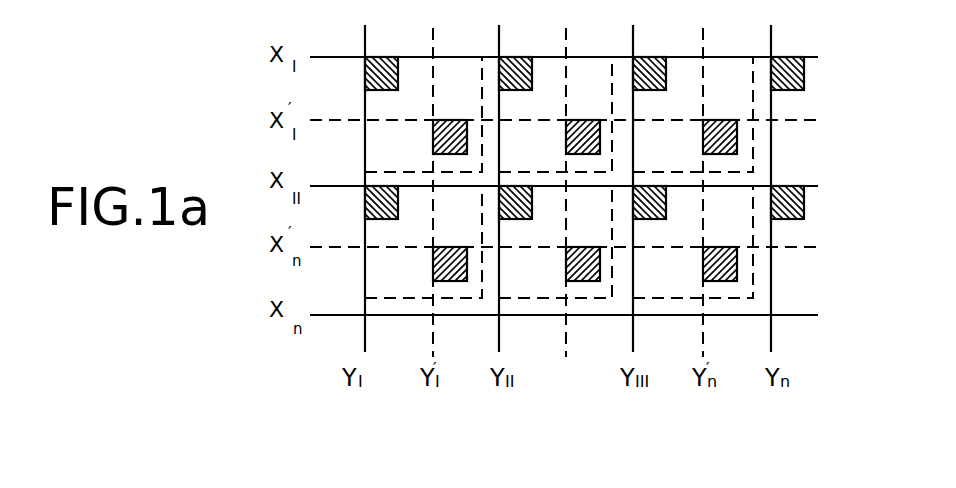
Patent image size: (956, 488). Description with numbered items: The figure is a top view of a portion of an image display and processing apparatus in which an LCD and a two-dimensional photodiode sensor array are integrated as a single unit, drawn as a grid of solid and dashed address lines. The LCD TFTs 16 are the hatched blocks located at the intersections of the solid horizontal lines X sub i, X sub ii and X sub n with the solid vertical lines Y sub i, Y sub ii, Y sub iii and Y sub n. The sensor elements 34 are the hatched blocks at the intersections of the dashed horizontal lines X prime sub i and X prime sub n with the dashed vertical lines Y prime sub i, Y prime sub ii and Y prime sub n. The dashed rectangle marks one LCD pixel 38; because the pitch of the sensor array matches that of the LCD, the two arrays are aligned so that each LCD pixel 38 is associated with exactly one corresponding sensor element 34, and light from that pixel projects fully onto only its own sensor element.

The TFT circuitry 16 is at (370, 56).
The sensor element 34 is at (459, 282).
The LCD pixel 38 is at (413, 292).